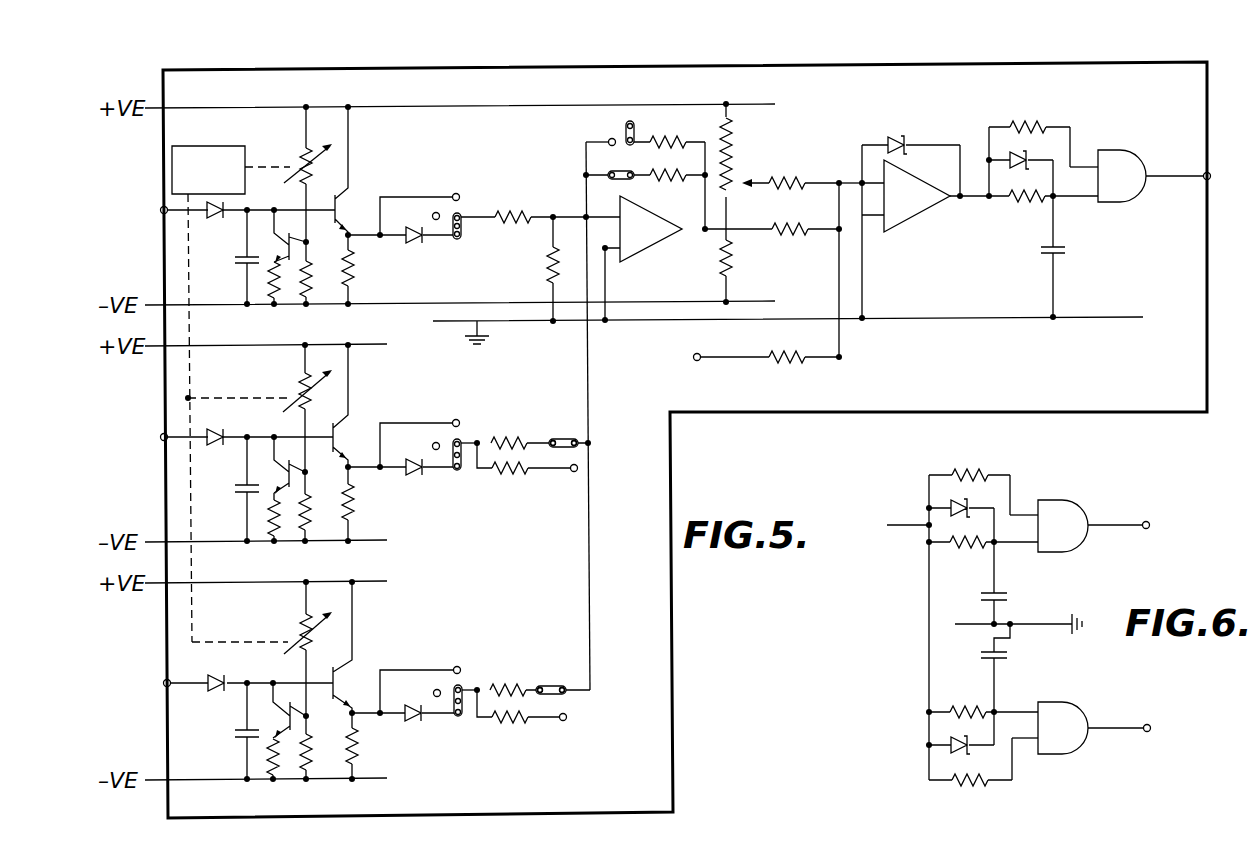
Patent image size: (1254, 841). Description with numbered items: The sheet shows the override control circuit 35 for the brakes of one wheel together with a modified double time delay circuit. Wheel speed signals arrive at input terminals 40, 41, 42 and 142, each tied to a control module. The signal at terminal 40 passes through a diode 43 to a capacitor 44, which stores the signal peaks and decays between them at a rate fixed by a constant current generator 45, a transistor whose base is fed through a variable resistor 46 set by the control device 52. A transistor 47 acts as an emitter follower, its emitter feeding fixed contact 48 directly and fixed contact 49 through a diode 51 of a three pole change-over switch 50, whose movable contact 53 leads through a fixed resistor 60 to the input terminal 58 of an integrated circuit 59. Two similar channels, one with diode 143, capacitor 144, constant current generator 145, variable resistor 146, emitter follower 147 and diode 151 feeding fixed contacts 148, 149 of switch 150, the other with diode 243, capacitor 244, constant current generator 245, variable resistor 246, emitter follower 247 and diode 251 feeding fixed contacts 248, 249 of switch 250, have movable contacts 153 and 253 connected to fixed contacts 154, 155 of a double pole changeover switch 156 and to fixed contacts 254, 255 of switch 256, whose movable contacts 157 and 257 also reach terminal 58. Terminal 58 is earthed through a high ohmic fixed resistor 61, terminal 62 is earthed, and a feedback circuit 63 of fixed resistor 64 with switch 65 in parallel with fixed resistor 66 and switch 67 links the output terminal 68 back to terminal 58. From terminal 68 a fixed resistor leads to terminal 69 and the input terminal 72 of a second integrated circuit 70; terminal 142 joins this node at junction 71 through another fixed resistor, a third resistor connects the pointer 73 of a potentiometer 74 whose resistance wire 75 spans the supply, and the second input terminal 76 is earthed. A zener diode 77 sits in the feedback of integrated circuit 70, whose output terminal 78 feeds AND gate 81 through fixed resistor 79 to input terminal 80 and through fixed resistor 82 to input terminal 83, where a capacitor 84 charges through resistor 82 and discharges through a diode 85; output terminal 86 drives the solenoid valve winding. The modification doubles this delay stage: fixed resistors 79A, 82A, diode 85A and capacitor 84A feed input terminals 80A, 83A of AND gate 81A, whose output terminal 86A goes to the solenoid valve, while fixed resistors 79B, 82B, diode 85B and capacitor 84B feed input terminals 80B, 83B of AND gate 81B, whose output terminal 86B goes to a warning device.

In FIG. 5, the override control circuit 35 is at (680, 767).
In FIG. 5, the input terminal 40 is at (160, 210).
In FIG. 5, the input terminal 41 is at (160, 438).
In FIG. 5, the input terminal 42 is at (165, 684).
In FIG. 5, the diode 43 is at (217, 218).
In FIG. 5, the capacitor 44 is at (234, 262).
In FIG. 5, the constant current generator 45 is at (295, 290).
In FIG. 5, the variable resistor 46 is at (304, 152).
In FIG. 5, the transistor 47 is at (350, 210).
In FIG. 5, the fixed contact 48 is at (452, 196).
In FIG. 5, the fixed contact 49 is at (456, 240).
In FIG. 5, the three pole change-over switch 50 is at (470, 197).
In FIG. 5, the diode 51 is at (413, 247).
In FIG. 5, the control device 52 is at (172, 167).
In FIG. 5, the movable contact 53 is at (460, 230).
In FIG. 5, the input terminal 58 is at (585, 218).
In FIG. 5, the integrated circuit 59 is at (648, 238).
In FIG. 5, the fixed resistor 60 is at (542, 208).
In FIG. 5, the high ohmic value fixed resistor 61 is at (544, 268).
In FIG. 5, the terminal 62 is at (606, 255).
In FIG. 5, the feedback circuit 63 is at (582, 141).
In FIG. 5, the fixed resistor 64 is at (672, 140).
In FIG. 5, the switch 65 is at (620, 138).
In FIG. 5, the fixed resistor 66 is at (666, 182).
In FIG. 5, the switch 67 is at (612, 173).
In FIG. 5, the output terminal 68 is at (720, 233).
In FIG. 5, the terminal 69 is at (838, 234).
In FIG. 5, the integrated circuit 70 is at (906, 228).
In FIG. 5, the junction 71 is at (844, 357).
In FIG. 5, the input terminal 72 is at (842, 181).
In FIG. 5, the pointer 73 is at (748, 182).
In FIG. 5, the potentiometer 74 is at (740, 156).
In FIG. 5, the resistance wire 75 is at (728, 216).
In FIG. 5, the second input terminal 76 is at (882, 212).
In FIG. 5, the zener diode 77 is at (896, 132).
In FIG. 5, the output terminal 78 is at (962, 202).
In FIG. 5, the fixed resistor 79 is at (1019, 119).
In FIG. 5, the input terminal 80 is at (1097, 163).
In FIG. 5, the AND gate 81 is at (1116, 166).
In FIG. 5, the fixed resistor 82 is at (1031, 206).
In FIG. 5, the input terminal 83 is at (1094, 200).
In FIG. 5, the capacitor 84 is at (1046, 256).
In FIG. 5, the diode 85 is at (1016, 155).
In FIG. 5, the output terminal 86 is at (1207, 180).
In FIG. 5, the input terminal 142 is at (692, 358).
In FIG. 5, the diode 143 is at (218, 428).
In FIG. 5, the capacitor 144 is at (235, 492).
In FIG. 5, the constant current generator 145 is at (298, 535).
In FIG. 5, the variable resistor 146 is at (300, 388).
In FIG. 5, the emitter follower 147 is at (354, 434).
In FIG. 5, the fixed contact 148 is at (452, 418).
In FIG. 5, the fixed contact 149 is at (456, 473).
In FIG. 5, the three pole changeover switch 150 is at (468, 431).
In FIG. 5, the diode 151 is at (410, 474).
In FIG. 5, the movable contact 153 is at (460, 464).
In FIG. 5, the fixed contact 154 is at (554, 438).
In FIG. 5, the fixed contact 155 is at (571, 473).
In FIG. 5, the double pole changeover switch 156 is at (578, 453).
In FIG. 5, the movable contact 157 is at (571, 435).
In FIG. 5, the diode 243 is at (217, 694).
In FIG. 5, the capacitor 244 is at (234, 740).
In FIG. 5, the constant current generator 245 is at (290, 772).
In FIG. 5, the variable resistor 246 is at (294, 622).
In FIG. 5, the emitter follower 247 is at (358, 682).
In FIG. 5, the fixed contact 248 is at (456, 666).
In FIG. 5, the fixed contact 249 is at (460, 720).
In FIG. 5, the three pole changeover switch 250 is at (470, 680).
In FIG. 5, the diode 251 is at (415, 719).
In FIG. 5, the movable contact 253 is at (475, 712).
In FIG. 5, the fixed contact 254 is at (555, 684).
In FIG. 5, the fixed contact 255 is at (566, 722).
In FIG. 5, the double pole changeover switch 256 is at (574, 702).
In FIG. 5, the movable contact 257 is at (567, 686).
In FIG. 6, the fixed resistor 79A is at (960, 472).
In FIG. 6, the input terminal 80A is at (1032, 512).
In FIG. 6, the AND gate 81A is at (1070, 516).
In FIG. 6, the fixed resistor 82A is at (968, 550).
In FIG. 6, the input terminal 83A is at (1031, 546).
In FIG. 6, the capacitor 84A is at (974, 599).
In FIG. 6, the capacitor 84B is at (974, 655).
In FIG. 6, the diode 85A is at (950, 506).
In FIG. 6, the diode 85B is at (950, 751).
In FIG. 6, the output terminal 86A is at (1160, 508).
In FIG. 6, the output terminal 86B is at (1148, 732).
In FIG. 6, the fixed resistor 79B is at (956, 783).
In FIG. 6, the input terminal 80B is at (1029, 748).
In FIG. 6, the AND gate 81B is at (1081, 714).
In FIG. 6, the fixed resistor 82B is at (965, 706).
In FIG. 6, the input terminal 83B is at (1034, 706).